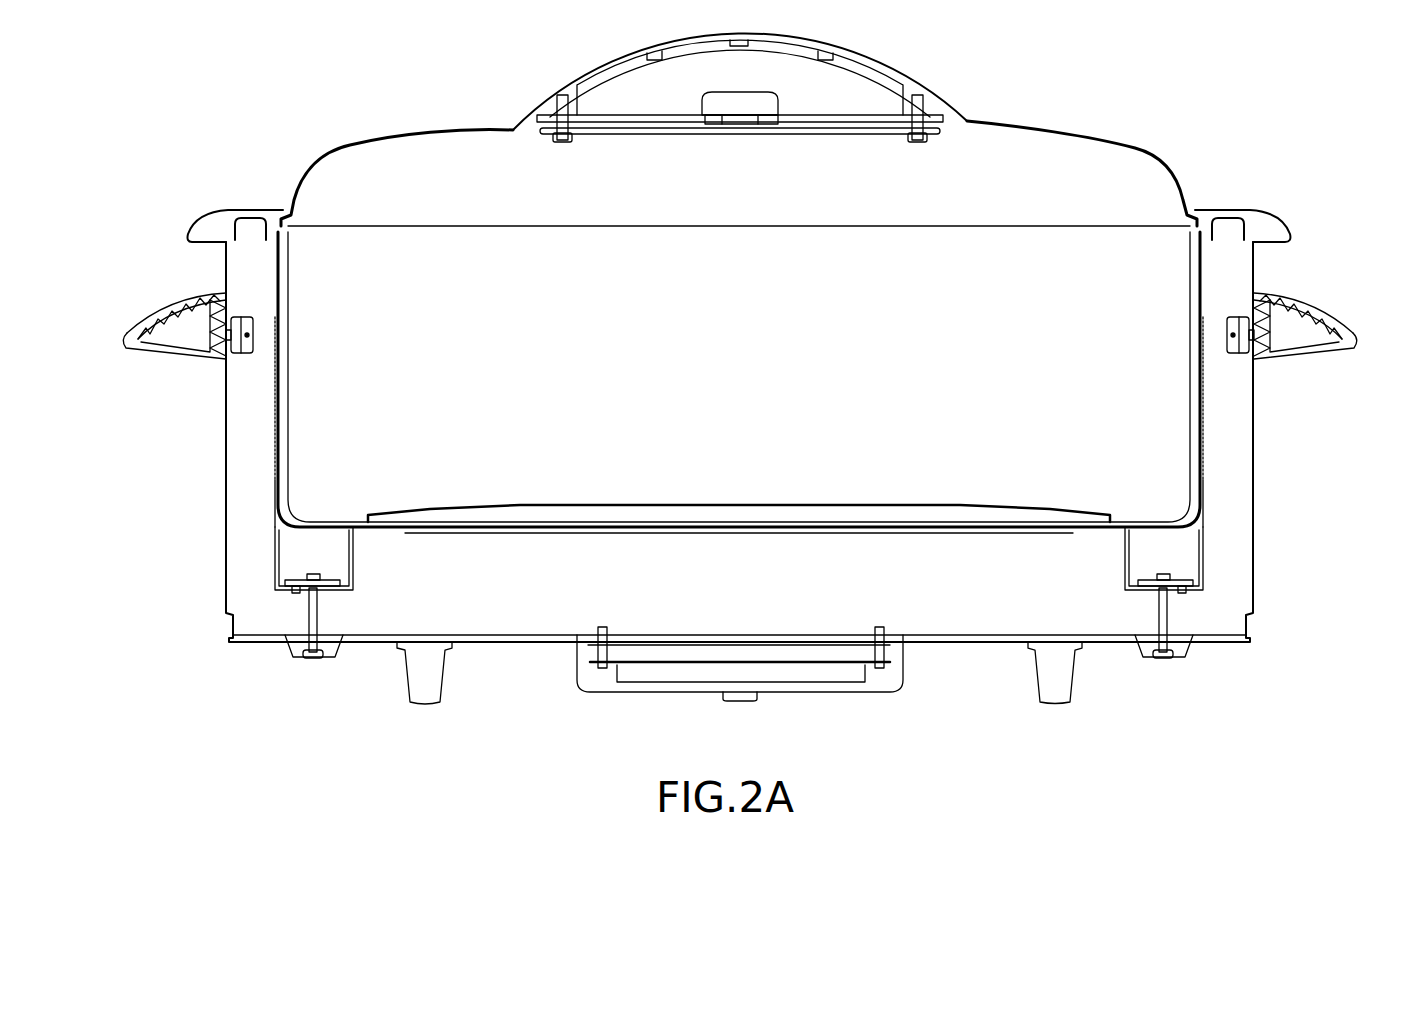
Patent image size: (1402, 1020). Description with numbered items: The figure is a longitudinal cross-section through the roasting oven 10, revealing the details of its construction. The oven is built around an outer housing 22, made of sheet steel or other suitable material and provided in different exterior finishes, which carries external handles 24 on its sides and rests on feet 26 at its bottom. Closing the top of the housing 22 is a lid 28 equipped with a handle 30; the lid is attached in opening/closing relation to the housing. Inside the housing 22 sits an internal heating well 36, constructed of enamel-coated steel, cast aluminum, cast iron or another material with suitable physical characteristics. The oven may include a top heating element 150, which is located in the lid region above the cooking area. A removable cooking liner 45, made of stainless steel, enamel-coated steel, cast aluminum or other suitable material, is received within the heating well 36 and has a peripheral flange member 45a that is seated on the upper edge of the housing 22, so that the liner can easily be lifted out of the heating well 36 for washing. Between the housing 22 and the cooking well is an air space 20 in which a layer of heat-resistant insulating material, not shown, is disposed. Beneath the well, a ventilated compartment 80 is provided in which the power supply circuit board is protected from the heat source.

The roasting oven 10 is at (1131, 93).
The air space 20 is at (531, 587).
The outer housing 22 is at (1254, 488).
The external handle 24 is at (1303, 297).
The foot 26 is at (1067, 700).
The lid 28 is at (1158, 152).
The handle 30 is at (590, 63).
The internal heating well 36 is at (287, 525).
The removable cooking liner 45 is at (1177, 505).
The peripheral flange member 45a is at (197, 232).
The ventilated compartment 80 is at (905, 688).
The top heating element 150 is at (855, 152).